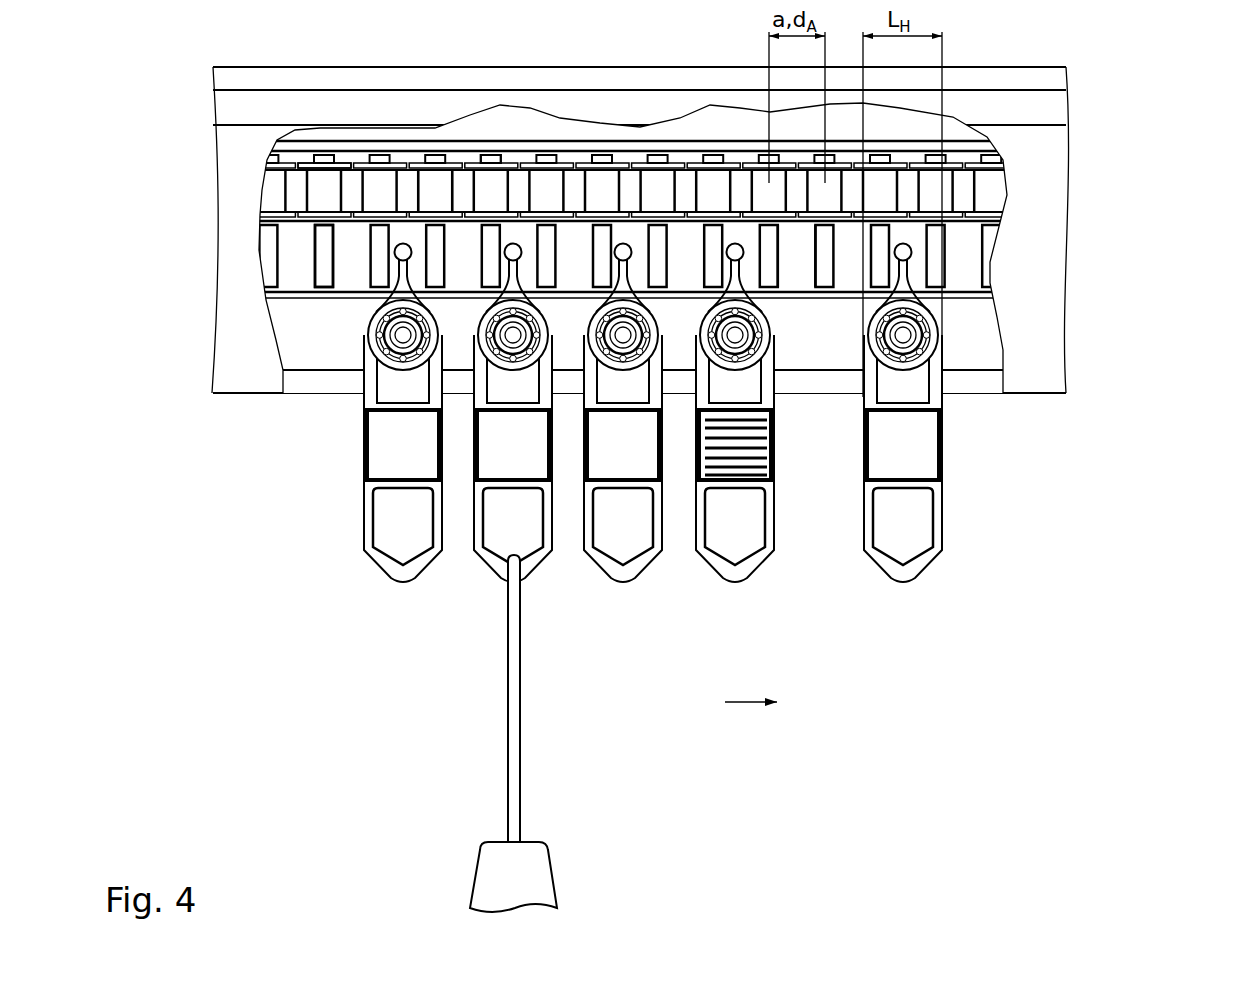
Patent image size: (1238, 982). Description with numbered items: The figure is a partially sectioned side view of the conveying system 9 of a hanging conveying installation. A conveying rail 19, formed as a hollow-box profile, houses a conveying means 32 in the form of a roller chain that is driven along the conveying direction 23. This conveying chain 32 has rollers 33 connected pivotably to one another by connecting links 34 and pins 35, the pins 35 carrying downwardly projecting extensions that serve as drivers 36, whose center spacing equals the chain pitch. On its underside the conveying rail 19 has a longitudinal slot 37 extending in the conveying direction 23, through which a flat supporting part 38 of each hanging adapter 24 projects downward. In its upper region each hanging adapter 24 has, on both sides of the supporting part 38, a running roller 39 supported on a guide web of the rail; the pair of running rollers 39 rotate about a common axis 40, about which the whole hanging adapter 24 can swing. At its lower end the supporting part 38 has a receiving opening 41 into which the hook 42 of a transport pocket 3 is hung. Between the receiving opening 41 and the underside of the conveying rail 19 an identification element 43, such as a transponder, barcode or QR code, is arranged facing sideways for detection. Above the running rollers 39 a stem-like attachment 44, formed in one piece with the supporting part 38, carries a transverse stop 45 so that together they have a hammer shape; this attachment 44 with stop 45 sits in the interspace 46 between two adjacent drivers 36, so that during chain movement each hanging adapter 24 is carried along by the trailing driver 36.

The transport pocket 3 is at (558, 880).
The conveying system 9 is at (1112, 227).
The conveying rail 19 is at (226, 398).
The conveying direction 23 is at (750, 702).
The hanging adapter 24 is at (350, 446).
The conveying means 32 is at (260, 197).
The rollers 33 is at (434, 183).
The connecting links 34 is at (338, 212).
The pins 35 is at (492, 160).
The drivers 36 is at (322, 248).
The longitudinal slot 37 is at (962, 396).
The supporting part 38 is at (423, 501).
The running roller 39 is at (272, 335).
The axis 40 is at (1025, 335).
The receiving opening 41 is at (347, 526).
The hook 42 is at (515, 752).
The identification element 43 is at (766, 538).
The attachment 44 is at (268, 291).
The stop 45 is at (392, 132).
The interspace 46 is at (802, 255).